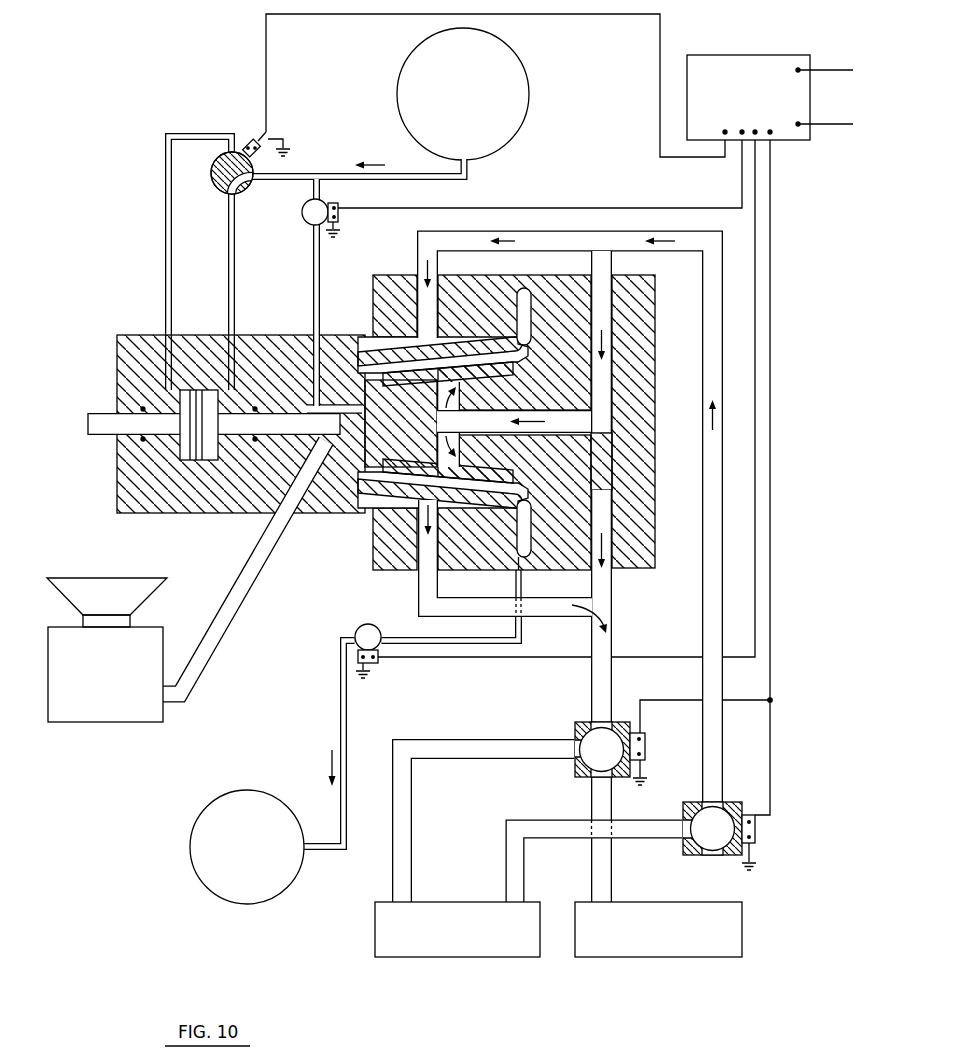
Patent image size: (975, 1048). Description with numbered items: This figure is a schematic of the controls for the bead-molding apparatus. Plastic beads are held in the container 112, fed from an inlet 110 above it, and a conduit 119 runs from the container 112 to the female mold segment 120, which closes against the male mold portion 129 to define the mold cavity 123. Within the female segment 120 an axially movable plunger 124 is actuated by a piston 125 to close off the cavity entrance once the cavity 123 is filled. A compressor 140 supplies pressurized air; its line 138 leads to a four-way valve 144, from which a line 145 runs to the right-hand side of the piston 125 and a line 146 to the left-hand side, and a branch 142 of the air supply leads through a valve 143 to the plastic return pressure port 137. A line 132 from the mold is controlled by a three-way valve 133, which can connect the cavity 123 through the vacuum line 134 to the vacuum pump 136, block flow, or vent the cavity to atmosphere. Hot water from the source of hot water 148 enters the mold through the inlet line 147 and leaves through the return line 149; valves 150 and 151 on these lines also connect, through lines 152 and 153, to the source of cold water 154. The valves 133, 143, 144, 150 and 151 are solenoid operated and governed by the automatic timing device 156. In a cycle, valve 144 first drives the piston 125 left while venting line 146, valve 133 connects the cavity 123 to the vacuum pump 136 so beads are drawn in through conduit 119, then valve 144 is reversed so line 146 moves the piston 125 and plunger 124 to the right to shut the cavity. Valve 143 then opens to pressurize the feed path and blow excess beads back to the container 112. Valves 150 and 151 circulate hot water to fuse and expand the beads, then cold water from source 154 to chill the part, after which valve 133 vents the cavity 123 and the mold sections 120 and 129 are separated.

The hopper 110 is at (140, 603).
The container 112 is at (135, 710).
The conduit 119 is at (237, 598).
The female mold segment 120 is at (372, 400).
The mold cavity 123 is at (341, 458).
The plunger 124 is at (284, 338).
The piston 125 is at (197, 462).
The male mold portion 129 is at (659, 571).
The line 132 is at (524, 637).
The three-way valve 133 is at (361, 626).
The vacuum line 134 is at (340, 723).
The vacuum pump 136 is at (276, 877).
The plastic return pressure port 137 is at (323, 339).
The line 138 is at (418, 172).
The compressor 140 is at (503, 76).
The conduit branch 142 is at (312, 190).
The valve 143 is at (304, 219).
The four-way valve 144 is at (222, 187).
The line 145 is at (233, 243).
The line 146 is at (165, 202).
The hot water inlet line 147 is at (708, 541).
The source of hot water 148 is at (732, 950).
The return line 149 is at (607, 646).
The valve 150 is at (705, 802).
The valve 151 is at (588, 733).
The line 152 is at (546, 826).
The line 153 is at (480, 740).
The source of cold water 154 is at (505, 946).
The automatic timing device 156 is at (749, 57).